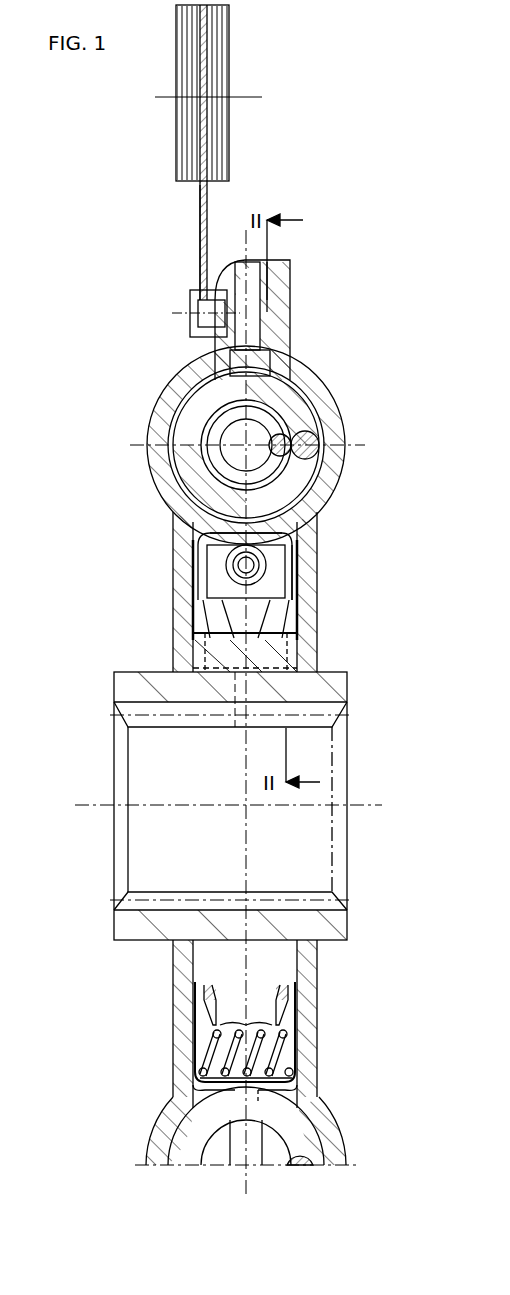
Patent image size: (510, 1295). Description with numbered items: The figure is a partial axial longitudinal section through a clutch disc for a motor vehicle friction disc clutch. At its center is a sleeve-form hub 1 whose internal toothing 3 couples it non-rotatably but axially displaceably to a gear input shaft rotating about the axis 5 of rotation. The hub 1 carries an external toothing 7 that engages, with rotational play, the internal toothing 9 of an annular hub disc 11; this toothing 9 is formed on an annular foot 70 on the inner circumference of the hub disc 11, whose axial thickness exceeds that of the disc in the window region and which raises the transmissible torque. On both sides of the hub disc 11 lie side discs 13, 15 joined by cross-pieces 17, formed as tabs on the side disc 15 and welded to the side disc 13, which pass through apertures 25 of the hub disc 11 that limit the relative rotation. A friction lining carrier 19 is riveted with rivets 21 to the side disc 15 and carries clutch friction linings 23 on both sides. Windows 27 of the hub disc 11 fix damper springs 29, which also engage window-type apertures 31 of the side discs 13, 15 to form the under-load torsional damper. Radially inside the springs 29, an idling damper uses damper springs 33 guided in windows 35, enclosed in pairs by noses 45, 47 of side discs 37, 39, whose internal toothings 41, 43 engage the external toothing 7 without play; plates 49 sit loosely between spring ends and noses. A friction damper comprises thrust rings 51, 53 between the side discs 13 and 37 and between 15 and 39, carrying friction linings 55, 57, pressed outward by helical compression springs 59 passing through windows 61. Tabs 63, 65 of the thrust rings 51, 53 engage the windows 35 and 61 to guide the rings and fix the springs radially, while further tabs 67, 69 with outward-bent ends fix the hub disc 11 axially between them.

The hub 1 is at (333, 695).
The internal toothing 3 is at (333, 728).
The axis of rotation 5 is at (372, 805).
The external toothing 7 is at (283, 645).
The internal toothing 9 is at (237, 730).
The hub disc 11 is at (257, 324).
The side disc 13 is at (322, 388).
The side disc 15 is at (183, 374).
The cross-pieces 17 is at (232, 265).
The friction lining carrier 19 is at (200, 222).
The rivets 21 is at (190, 300).
The clutch friction linings 23 is at (218, 62).
The apertures 25 is at (270, 262).
The windows 27 is at (262, 366).
The damper springs 29 is at (297, 410).
The window-type apertures 31 is at (166, 470).
The damper springs 33 is at (228, 580).
The windows 35 is at (300, 586).
The side disc 37 is at (300, 607).
The side disc 39 is at (210, 606).
The internal toothing 41 is at (300, 630).
The internal toothing 43 is at (190, 653).
The noses 45 is at (292, 543).
The noses 47 is at (205, 540).
The plates 49 is at (208, 568).
The thrust ring 51 is at (300, 568).
The thrust ring 53 is at (188, 549).
The friction lining 55 is at (300, 994).
The friction lining 57 is at (200, 1020).
The helical compression springs 59 is at (294, 1023).
The windows 61 is at (196, 992).
The tabs 63 is at (310, 513).
The tabs 65 is at (205, 1090).
The tabs 67 is at (275, 1096).
The tabs 69 is at (174, 511).
The annular foot 70 is at (210, 628).